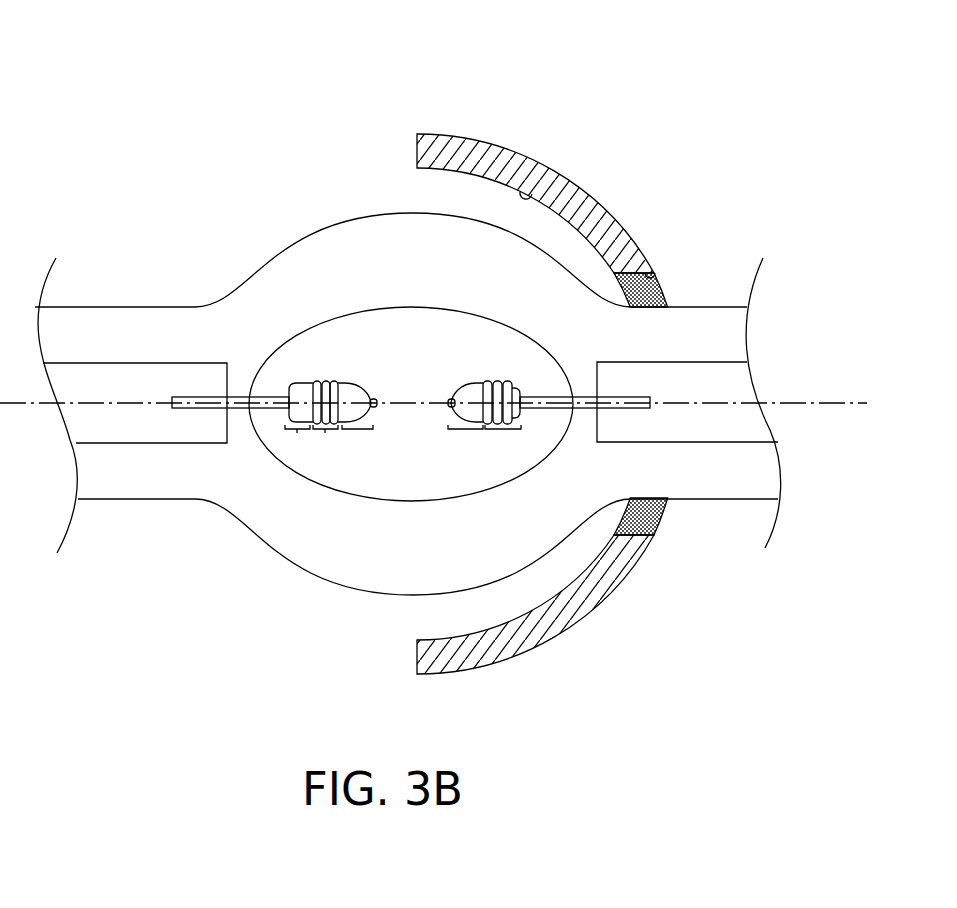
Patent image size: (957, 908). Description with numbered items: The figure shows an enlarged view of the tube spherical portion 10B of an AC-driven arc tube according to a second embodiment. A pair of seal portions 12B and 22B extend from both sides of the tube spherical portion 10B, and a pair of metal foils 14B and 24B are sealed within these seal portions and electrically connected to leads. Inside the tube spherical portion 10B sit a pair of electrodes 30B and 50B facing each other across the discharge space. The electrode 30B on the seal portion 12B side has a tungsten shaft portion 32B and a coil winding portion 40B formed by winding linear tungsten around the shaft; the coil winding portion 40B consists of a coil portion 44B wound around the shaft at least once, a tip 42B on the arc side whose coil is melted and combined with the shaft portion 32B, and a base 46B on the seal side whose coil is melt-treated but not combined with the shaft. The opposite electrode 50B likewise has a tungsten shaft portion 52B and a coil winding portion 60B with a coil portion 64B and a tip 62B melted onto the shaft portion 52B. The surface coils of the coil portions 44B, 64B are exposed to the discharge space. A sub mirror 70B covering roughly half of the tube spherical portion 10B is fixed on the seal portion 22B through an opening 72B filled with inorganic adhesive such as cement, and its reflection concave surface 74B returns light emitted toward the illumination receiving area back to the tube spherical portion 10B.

The tube spherical portion 10B is at (358, 206).
The seal portion 12B is at (170, 275).
The metal foil 14B is at (84, 363).
The seal portion 22B is at (733, 242).
The metal foil 24B is at (682, 362).
The electrode 30B is at (392, 395).
The shaft portion 32B is at (248, 412).
The coil winding portion 40B is at (325, 427).
The tip 42B is at (364, 423).
The coil portion 44B is at (325, 433).
The base 46B is at (297, 433).
The electrode 50B is at (442, 410).
The shaft portion 52B is at (587, 410).
The coil winding portion 60B is at (486, 405).
The tip 62B is at (457, 423).
The coil portion 64B is at (510, 422).
The sub mirror 70B is at (560, 390).
The opening 72B is at (656, 277).
The reflection concave surface 74B is at (540, 190).